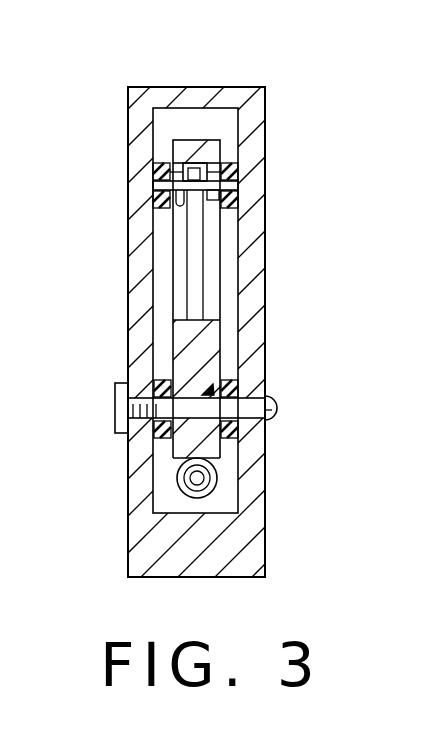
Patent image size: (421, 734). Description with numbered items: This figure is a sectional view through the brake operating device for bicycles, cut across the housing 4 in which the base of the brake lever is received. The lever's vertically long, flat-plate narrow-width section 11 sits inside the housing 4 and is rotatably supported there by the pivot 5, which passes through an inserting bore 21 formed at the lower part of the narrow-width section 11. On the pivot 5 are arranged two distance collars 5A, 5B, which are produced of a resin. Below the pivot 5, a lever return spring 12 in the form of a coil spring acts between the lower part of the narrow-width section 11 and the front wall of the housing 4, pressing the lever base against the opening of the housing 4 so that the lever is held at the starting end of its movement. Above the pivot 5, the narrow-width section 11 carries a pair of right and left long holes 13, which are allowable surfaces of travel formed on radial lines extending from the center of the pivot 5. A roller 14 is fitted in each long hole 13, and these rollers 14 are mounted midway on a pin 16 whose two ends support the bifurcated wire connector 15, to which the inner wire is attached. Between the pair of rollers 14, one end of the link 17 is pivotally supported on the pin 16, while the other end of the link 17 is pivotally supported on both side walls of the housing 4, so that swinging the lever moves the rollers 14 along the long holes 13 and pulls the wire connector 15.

The housing 4 is at (255, 97).
The link 17 is at (200, 158).
The roller 14 is at (237, 163).
The pin 16 is at (238, 187).
The wire connector 15 is at (232, 208).
The long holes 13 is at (165, 272).
The narrow-width section 11 is at (213, 355).
The inserting bore 21 is at (214, 390).
The pivot 5 is at (272, 408).
The distance collar 5A is at (240, 437).
The distance collar 5B is at (163, 438).
The lever return spring 12 is at (205, 480).